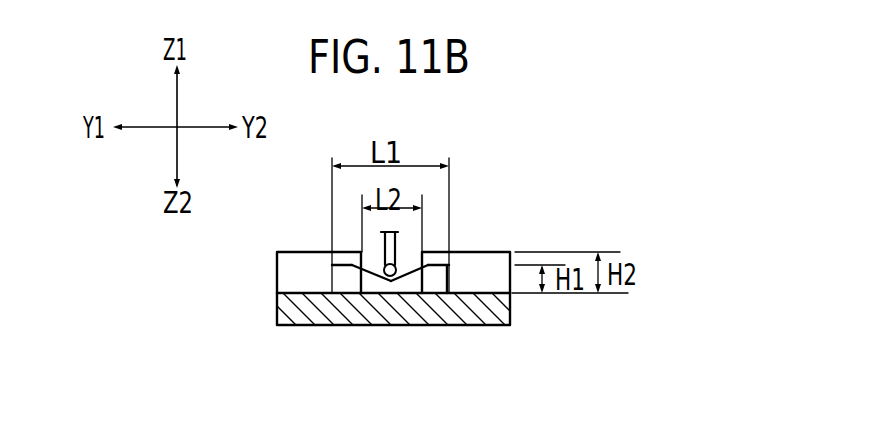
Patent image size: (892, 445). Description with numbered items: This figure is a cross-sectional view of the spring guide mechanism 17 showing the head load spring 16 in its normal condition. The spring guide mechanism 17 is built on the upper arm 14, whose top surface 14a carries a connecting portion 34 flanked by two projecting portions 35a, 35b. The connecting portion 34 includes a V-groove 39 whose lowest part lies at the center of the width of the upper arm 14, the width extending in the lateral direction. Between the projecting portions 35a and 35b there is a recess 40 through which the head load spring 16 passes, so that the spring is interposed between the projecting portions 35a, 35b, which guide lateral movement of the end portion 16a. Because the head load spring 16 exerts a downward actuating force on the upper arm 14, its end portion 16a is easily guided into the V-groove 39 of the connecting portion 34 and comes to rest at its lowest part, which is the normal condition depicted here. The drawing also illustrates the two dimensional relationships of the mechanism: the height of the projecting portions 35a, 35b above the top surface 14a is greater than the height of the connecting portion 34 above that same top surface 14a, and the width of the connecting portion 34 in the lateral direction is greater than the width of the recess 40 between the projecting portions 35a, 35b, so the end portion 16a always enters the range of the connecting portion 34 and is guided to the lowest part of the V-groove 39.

The upper arm 14 is at (486, 326).
The top surface of the upper arm 14a is at (293, 293).
The head load spring 16 is at (400, 236).
The end portion of the head load spring 16a is at (396, 281).
The spring guide mechanism 17 is at (421, 306).
The connecting portion 34 is at (437, 283).
The projecting portion 35a is at (478, 252).
The projecting portion 35b is at (298, 251).
The V-groove 39 is at (357, 270).
The recess 40 is at (408, 277).